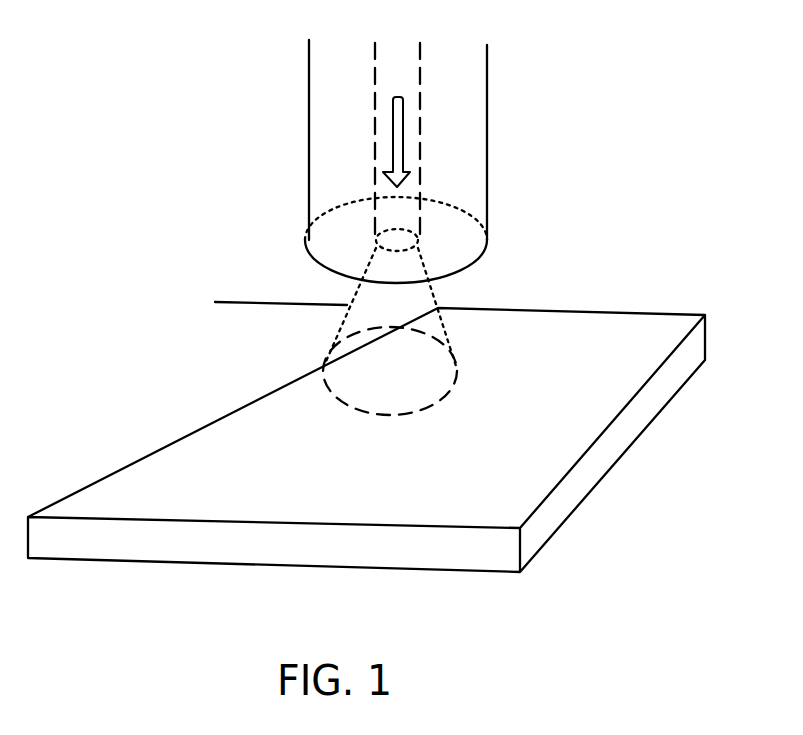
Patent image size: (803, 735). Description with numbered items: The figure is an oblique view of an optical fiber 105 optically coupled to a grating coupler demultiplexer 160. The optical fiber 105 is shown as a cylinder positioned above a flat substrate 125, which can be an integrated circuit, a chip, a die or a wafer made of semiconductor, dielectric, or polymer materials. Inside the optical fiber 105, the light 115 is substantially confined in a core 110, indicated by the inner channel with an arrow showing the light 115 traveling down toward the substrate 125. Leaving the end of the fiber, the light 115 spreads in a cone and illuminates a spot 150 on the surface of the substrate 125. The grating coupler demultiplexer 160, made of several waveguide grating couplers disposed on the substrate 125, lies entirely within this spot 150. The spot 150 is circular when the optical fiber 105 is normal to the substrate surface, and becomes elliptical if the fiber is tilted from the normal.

The optical fiber 105 is at (309, 57).
The core 110 is at (375, 127).
The light 115 is at (391, 168).
The substrate 125 is at (167, 491).
The spot 150 is at (327, 393).
The grating coupler demultiplexer 160 is at (385, 390).